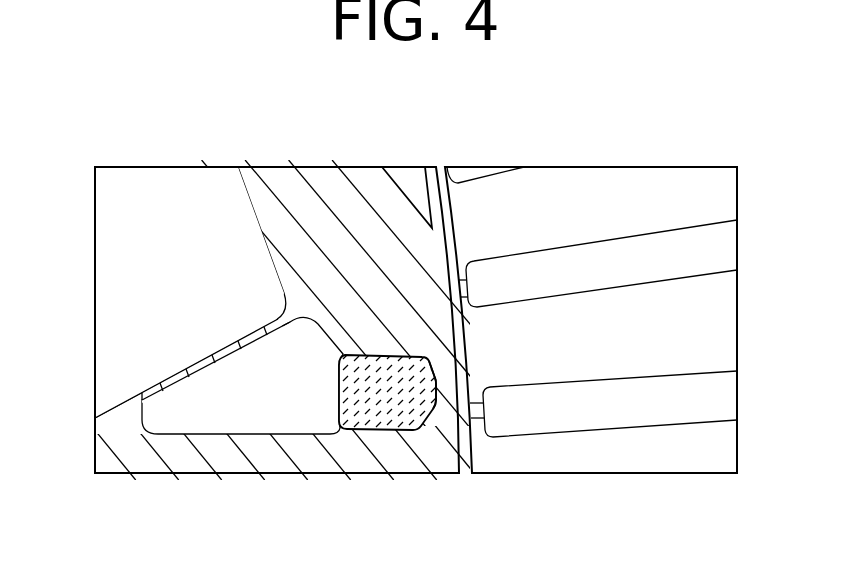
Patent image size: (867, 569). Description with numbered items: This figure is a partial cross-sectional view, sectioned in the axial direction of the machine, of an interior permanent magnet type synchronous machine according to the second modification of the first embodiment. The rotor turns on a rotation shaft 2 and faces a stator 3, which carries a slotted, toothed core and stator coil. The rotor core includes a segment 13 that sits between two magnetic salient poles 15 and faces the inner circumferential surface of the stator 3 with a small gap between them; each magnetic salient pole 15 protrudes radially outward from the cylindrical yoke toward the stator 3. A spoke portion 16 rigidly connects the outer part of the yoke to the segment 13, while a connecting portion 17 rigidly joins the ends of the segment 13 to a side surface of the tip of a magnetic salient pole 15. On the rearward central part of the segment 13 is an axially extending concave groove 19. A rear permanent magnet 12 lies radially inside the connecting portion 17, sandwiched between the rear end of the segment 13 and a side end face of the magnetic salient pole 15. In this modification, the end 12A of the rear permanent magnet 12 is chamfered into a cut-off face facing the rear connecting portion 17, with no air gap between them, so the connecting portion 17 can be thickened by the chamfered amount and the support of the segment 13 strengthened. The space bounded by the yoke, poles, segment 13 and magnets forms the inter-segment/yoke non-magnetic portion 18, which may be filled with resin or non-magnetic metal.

The rotation shaft 2 is at (196, 148).
The stator 3 is at (601, 148).
The rear permanent magnet 12 is at (375, 400).
The end of the rear permanent magnet 12A is at (437, 406).
The segment 13 is at (316, 187).
The magnetic salient pole 15 is at (260, 438).
The spoke portion 16 is at (196, 374).
The connecting portion 17 is at (450, 390).
The inter-segment/yoke non-magnetic portion 18 is at (173, 412).
The concave groove 19 is at (410, 187).